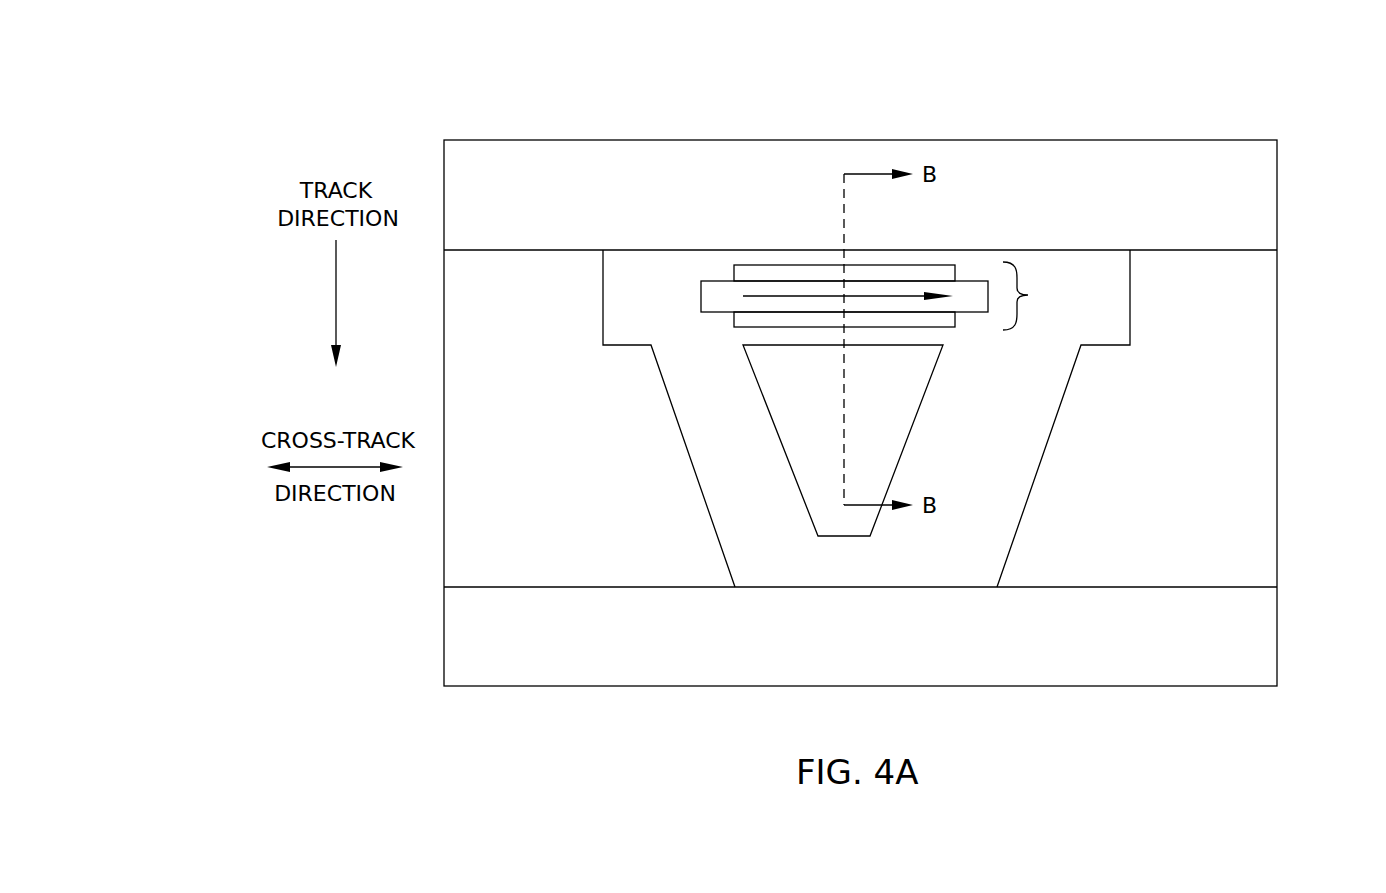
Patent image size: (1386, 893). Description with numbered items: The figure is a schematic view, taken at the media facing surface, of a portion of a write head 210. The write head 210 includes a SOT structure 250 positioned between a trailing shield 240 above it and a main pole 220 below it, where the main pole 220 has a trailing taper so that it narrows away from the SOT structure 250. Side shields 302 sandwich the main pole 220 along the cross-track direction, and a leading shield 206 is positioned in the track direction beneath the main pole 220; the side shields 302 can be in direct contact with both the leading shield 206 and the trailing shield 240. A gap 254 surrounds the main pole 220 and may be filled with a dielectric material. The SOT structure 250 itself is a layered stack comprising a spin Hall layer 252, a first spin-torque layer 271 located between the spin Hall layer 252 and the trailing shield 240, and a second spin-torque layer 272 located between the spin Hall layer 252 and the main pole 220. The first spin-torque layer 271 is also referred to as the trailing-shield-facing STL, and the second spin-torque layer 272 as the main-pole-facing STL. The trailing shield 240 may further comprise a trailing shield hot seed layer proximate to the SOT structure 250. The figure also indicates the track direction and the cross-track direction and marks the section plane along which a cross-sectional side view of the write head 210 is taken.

The write head 210 is at (388, 70).
The trailing shield 240 is at (1254, 206).
The leading shield 206 is at (1255, 648).
The side shields 302 is at (553, 439).
The gap 254 is at (1119, 332).
The main pole 220 is at (899, 393).
The first spin-torque layer 271 is at (900, 272).
The second spin-torque layer 272 is at (925, 320).
The spin Hall layer 252 is at (701, 292).
The SOT structure 250 is at (1037, 296).